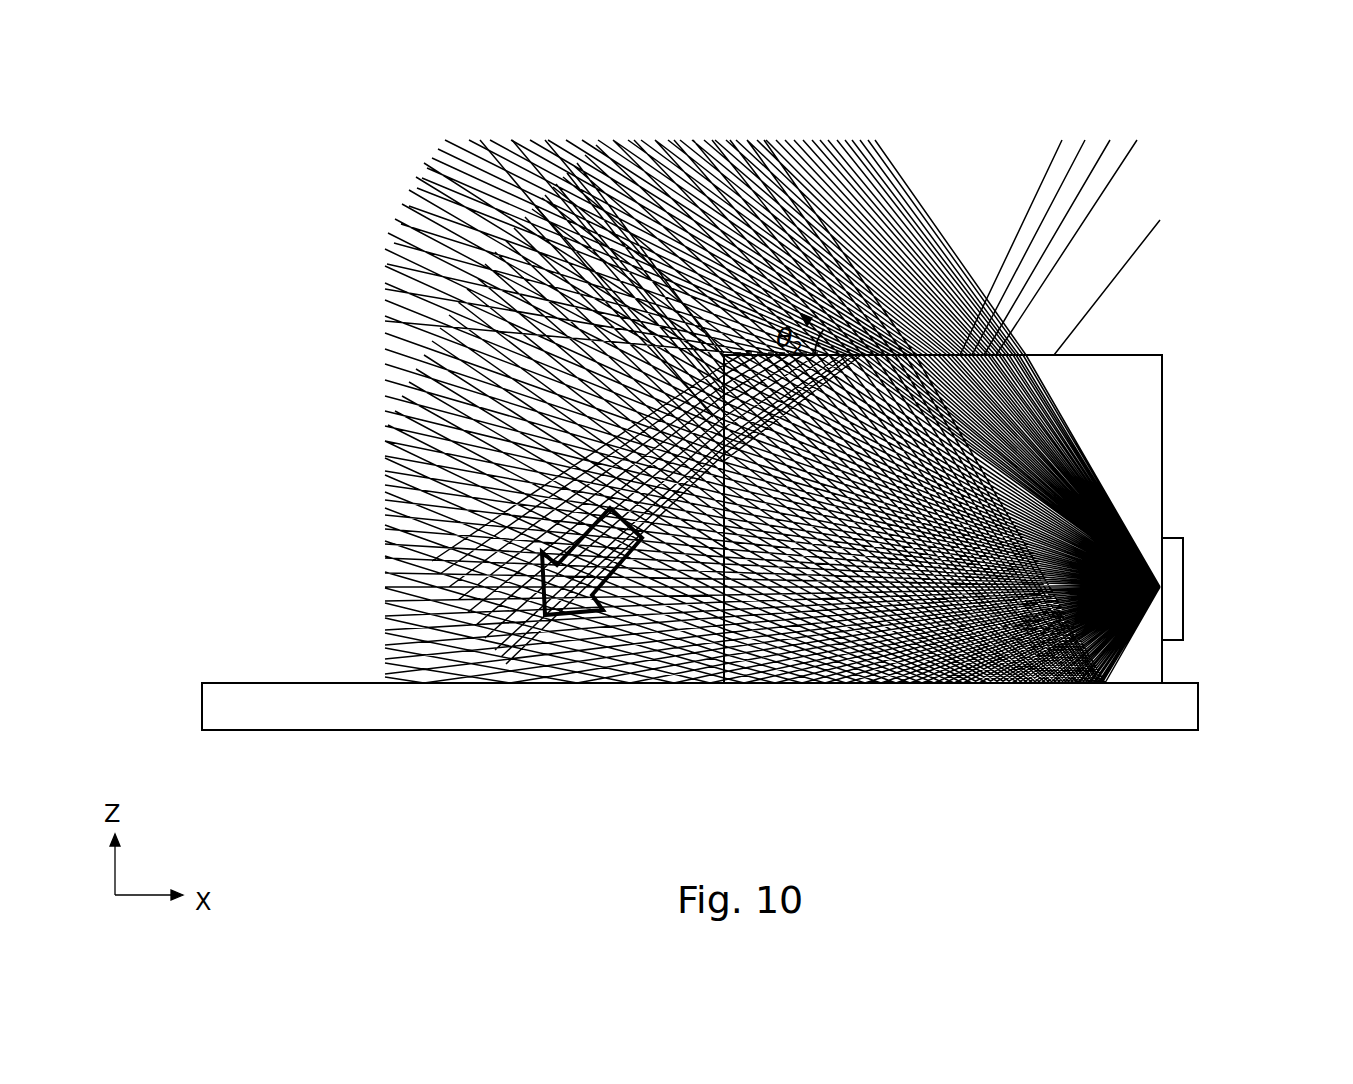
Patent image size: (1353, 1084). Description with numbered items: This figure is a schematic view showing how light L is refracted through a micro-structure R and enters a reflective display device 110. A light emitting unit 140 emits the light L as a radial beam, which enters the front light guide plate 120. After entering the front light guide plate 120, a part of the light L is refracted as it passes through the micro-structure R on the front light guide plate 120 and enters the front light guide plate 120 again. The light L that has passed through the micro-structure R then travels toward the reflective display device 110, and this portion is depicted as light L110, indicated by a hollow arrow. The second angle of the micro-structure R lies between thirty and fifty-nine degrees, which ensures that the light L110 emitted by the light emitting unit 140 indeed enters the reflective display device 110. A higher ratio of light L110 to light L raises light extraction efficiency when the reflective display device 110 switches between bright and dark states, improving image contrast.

The reflective display device 110 is at (1198, 706).
The front light guide plate 120 is at (1162, 447).
The light emitting unit 140 is at (1183, 587).
The light L is at (1127, 662).
The light toward the reflective display device L110 is at (540, 584).
The micro-structure R is at (957, 228).